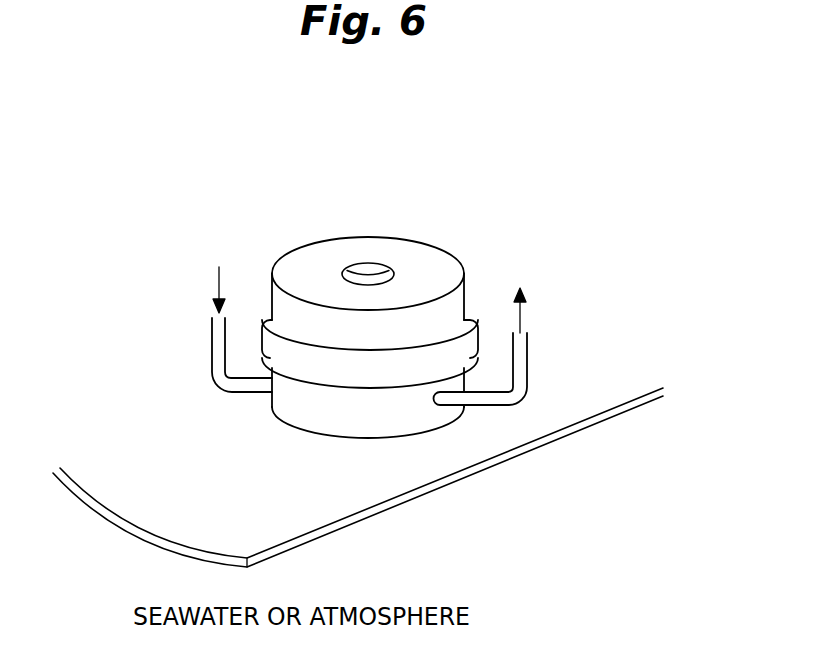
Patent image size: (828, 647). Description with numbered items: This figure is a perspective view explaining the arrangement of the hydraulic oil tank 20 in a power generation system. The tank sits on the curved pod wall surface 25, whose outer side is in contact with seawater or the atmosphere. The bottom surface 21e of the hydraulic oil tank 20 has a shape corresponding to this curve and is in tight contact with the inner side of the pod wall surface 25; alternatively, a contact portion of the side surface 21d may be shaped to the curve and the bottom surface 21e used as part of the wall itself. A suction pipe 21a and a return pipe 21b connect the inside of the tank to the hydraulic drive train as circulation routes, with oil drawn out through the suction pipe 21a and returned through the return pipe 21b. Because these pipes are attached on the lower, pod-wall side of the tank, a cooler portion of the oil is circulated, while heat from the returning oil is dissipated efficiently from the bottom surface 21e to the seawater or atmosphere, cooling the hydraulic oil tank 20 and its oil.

The hydraulic oil tank 20 is at (369, 301).
The suction pipe 21a is at (523, 355).
The return pipe 21b is at (218, 347).
The side surface 21d is at (470, 292).
The bottom surface 21e is at (460, 410).
The pod wall surface 25 is at (180, 520).